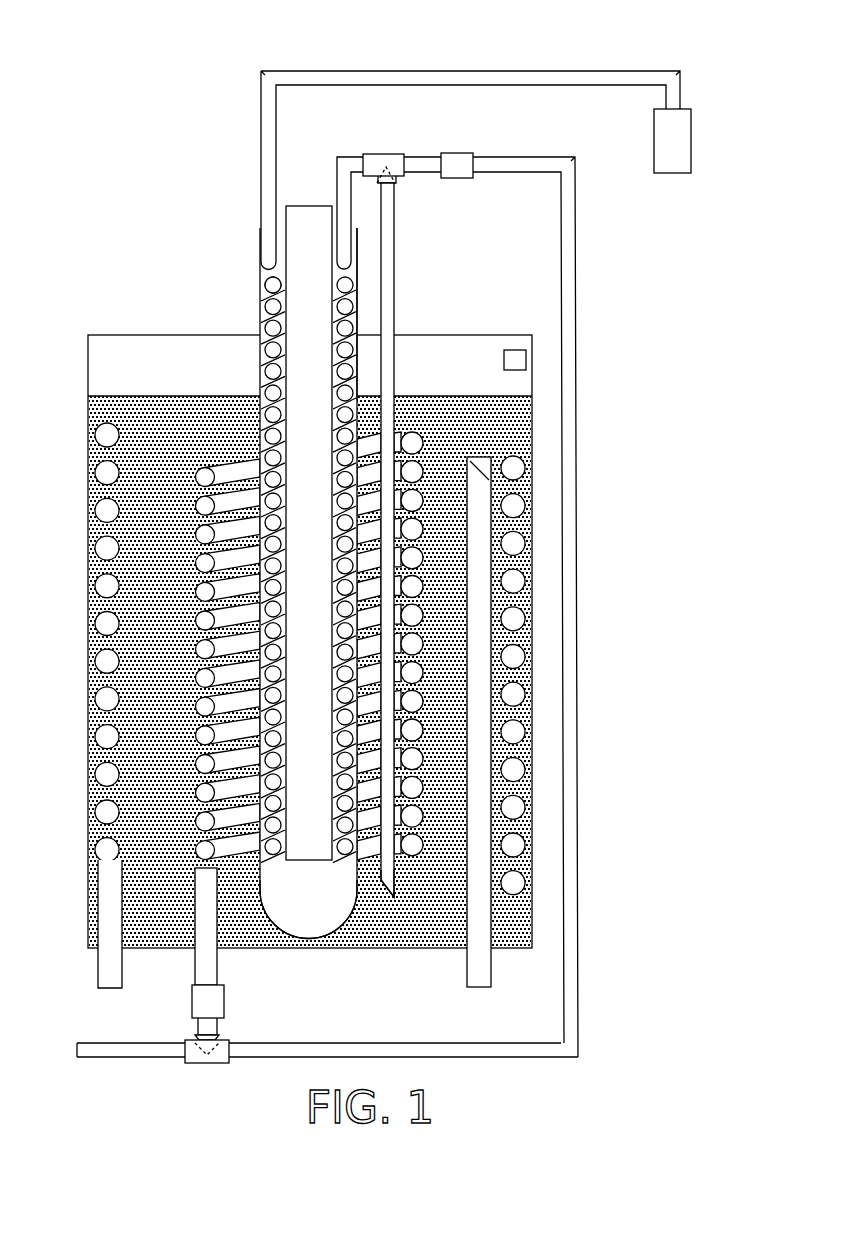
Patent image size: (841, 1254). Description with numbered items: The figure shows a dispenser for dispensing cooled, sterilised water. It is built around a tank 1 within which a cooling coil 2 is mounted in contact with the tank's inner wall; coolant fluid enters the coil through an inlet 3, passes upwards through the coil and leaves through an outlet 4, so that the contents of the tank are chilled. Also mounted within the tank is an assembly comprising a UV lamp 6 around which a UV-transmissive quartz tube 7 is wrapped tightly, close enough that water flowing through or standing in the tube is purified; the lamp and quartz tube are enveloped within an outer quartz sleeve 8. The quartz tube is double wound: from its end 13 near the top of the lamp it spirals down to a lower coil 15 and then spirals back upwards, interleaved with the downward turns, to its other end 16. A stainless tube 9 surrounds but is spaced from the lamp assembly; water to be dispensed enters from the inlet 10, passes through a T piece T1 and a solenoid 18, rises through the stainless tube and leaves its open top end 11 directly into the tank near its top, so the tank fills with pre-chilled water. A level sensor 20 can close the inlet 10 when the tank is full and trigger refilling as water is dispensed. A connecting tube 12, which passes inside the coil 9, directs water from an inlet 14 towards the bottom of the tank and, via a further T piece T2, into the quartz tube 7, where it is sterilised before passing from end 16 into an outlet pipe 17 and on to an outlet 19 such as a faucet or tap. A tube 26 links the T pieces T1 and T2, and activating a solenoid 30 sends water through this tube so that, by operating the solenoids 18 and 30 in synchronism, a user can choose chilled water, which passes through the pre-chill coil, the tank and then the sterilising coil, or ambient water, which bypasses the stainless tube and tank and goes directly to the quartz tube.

The tank 1 is at (103, 335).
The cooling coil 2 is at (100, 660).
The inlet 3 is at (97, 975).
The outlet 4 is at (493, 972).
The UV lamp 6 is at (308, 206).
The quartz tube 7 is at (357, 290).
The outer quartz sleeve 8 is at (258, 360).
The stainless tube 9 is at (420, 620).
The inlet 10 is at (97, 1062).
The top end 11 is at (420, 443).
The connecting tube 12 is at (395, 354).
The end 13 is at (351, 249).
The inlet 14 is at (390, 898).
The lower coil 15 is at (308, 938).
The end 16 is at (265, 285).
The outlet pipe 17 is at (299, 70).
The solenoid 18 is at (226, 1000).
The outlet 19 is at (654, 160).
The level sensor 20 is at (526, 357).
The tube 26 is at (579, 515).
The solenoid 30 is at (458, 153).
The T piece T1 is at (385, 154).
The T piece T2 is at (207, 1066).